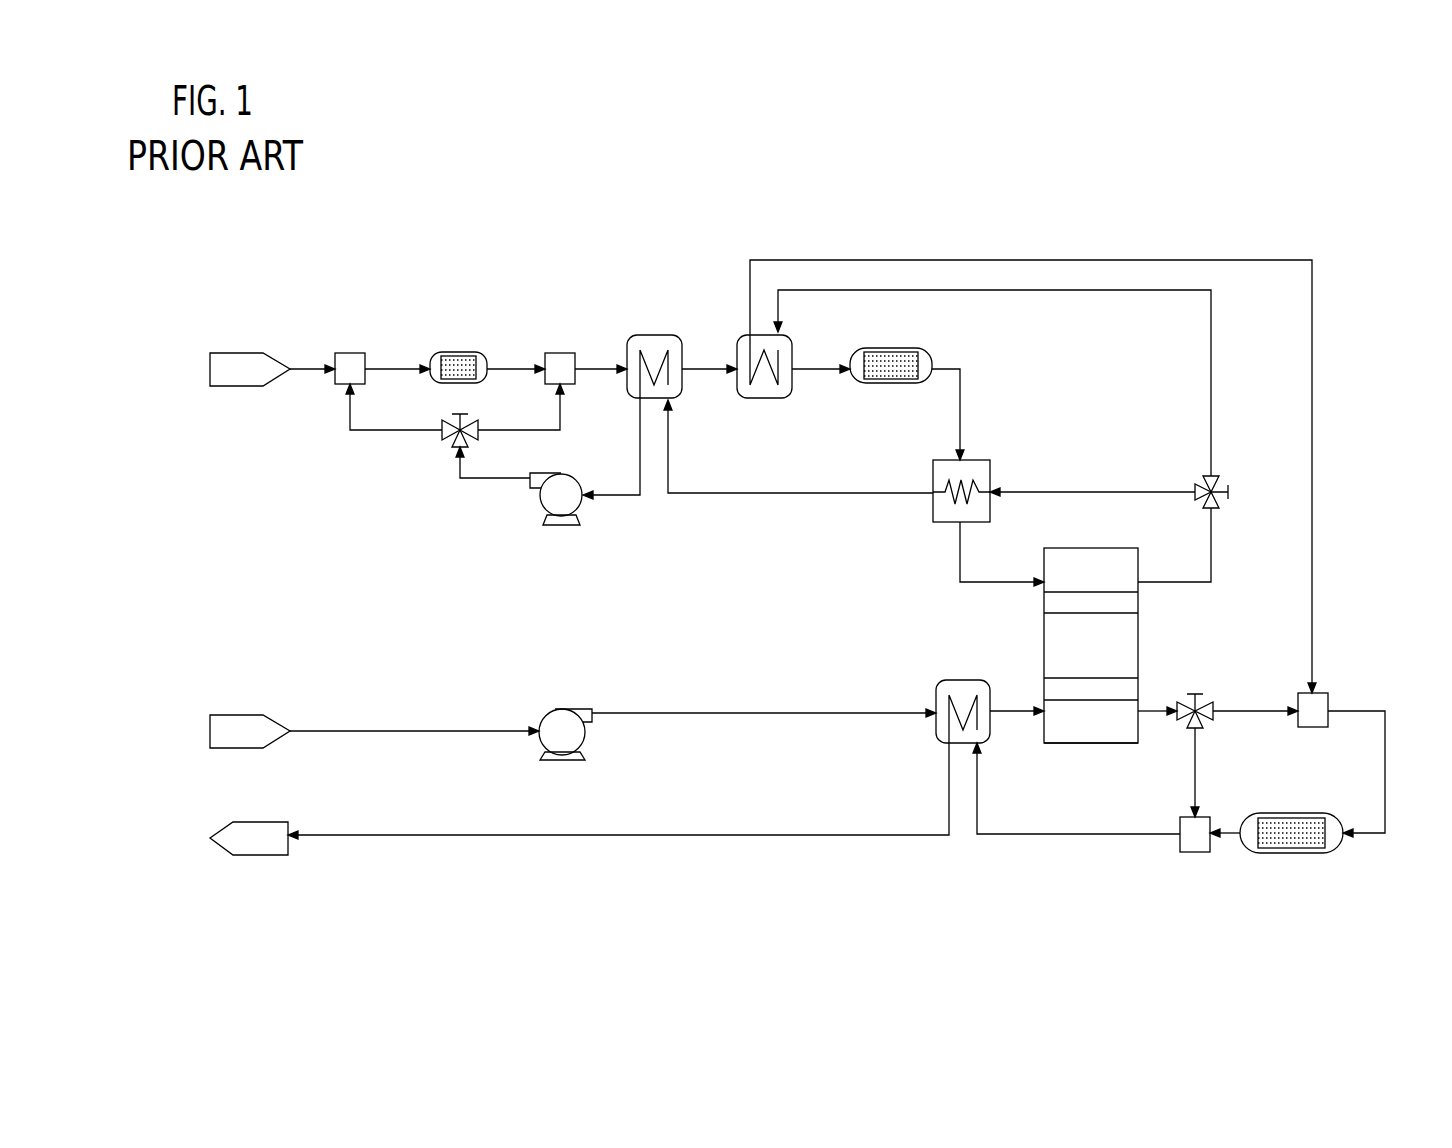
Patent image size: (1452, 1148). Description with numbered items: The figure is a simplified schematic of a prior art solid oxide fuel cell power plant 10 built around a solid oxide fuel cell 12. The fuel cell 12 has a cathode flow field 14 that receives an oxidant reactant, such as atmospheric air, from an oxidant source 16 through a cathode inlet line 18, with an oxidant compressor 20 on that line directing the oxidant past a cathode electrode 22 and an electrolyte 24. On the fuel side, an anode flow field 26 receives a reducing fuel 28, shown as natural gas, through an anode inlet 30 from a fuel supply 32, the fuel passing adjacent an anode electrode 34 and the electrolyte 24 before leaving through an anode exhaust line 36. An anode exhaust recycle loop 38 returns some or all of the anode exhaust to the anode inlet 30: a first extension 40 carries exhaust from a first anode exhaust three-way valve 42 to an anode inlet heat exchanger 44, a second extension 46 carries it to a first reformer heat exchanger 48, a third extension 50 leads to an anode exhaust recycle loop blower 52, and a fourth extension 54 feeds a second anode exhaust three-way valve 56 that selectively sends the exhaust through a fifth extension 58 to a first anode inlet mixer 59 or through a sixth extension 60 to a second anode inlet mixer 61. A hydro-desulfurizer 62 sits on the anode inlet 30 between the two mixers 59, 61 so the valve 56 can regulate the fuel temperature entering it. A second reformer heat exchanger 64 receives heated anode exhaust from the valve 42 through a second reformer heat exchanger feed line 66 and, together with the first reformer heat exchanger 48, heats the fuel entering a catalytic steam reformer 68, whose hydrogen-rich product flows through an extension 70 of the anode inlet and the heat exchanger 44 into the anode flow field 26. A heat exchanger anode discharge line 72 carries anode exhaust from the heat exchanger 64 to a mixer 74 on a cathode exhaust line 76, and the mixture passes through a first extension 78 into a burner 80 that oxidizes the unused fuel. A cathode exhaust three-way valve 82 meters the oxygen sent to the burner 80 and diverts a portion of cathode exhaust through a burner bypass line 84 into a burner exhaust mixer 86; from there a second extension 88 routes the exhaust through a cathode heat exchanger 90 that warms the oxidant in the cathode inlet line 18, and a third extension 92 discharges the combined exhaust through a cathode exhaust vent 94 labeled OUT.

The solid oxide fuel cell power plant 10 is at (1370, 220).
The solid oxide fuel cell 12 is at (1124, 656).
The cathode flow field 14 is at (1057, 731).
The oxidant source 16 is at (240, 714).
The cathode inlet line 18 is at (388, 730).
The oxidant compressor 20 is at (552, 712).
The cathode electrode 22 is at (1139, 688).
The electrolyte 24 is at (1043, 640).
The anode flow field 26 is at (1122, 560).
The reducing fuel 28 is at (260, 350).
The anode inlet 30 is at (305, 360).
The fuel supply 32 is at (250, 388).
The anode electrode 34 is at (1043, 600).
The anode exhaust line 36 is at (1210, 592).
The anode exhaust recycle loop 38 is at (1052, 400).
The first extension 40 is at (1110, 491).
The first anode exhaust three-way valve 42 is at (1218, 478).
The anode inlet heat exchanger 44 is at (932, 508).
The second extension 46 is at (783, 496).
The first reformer heat exchanger 48 is at (652, 334).
The third extension 50 is at (639, 470).
The anode exhaust recycle loop blower 52 is at (536, 500).
The fourth extension 54 is at (450, 470).
The second anode exhaust three-way valve 56 is at (441, 434).
The fifth extension 58 is at (348, 418).
The first anode inlet mixer 59 is at (350, 351).
The sixth extension 60 is at (557, 403).
The second anode inlet mixer 61 is at (553, 351).
The hydro-desulfurizer 62 is at (440, 351).
The second reformer heat exchanger 64 is at (762, 400).
The second reformer heat exchanger feed line 66 is at (1070, 291).
The catalytic steam reformer 68 is at (878, 384).
The extension of the anode inlet 70 is at (975, 420).
The heat exchanger anode discharge line 72 is at (1098, 259).
The mixer 74 is at (1328, 692).
The cathode exhaust line 76 is at (1272, 709).
The first extension of the cathode exhaust line 78 is at (1386, 745).
The burner 80 is at (1305, 812).
The cathode exhaust three-way valve 82 is at (1200, 729).
The burner bypass line 84 is at (1192, 770).
The burner exhaust mixer 86 is at (1179, 840).
The second extension of the cathode exhaust line 88 is at (1020, 833).
The cathode heat exchanger 90 is at (934, 741).
The third extension of the cathode exhaust line 92 is at (690, 834).
The cathode exhaust vent 94 is at (270, 821).